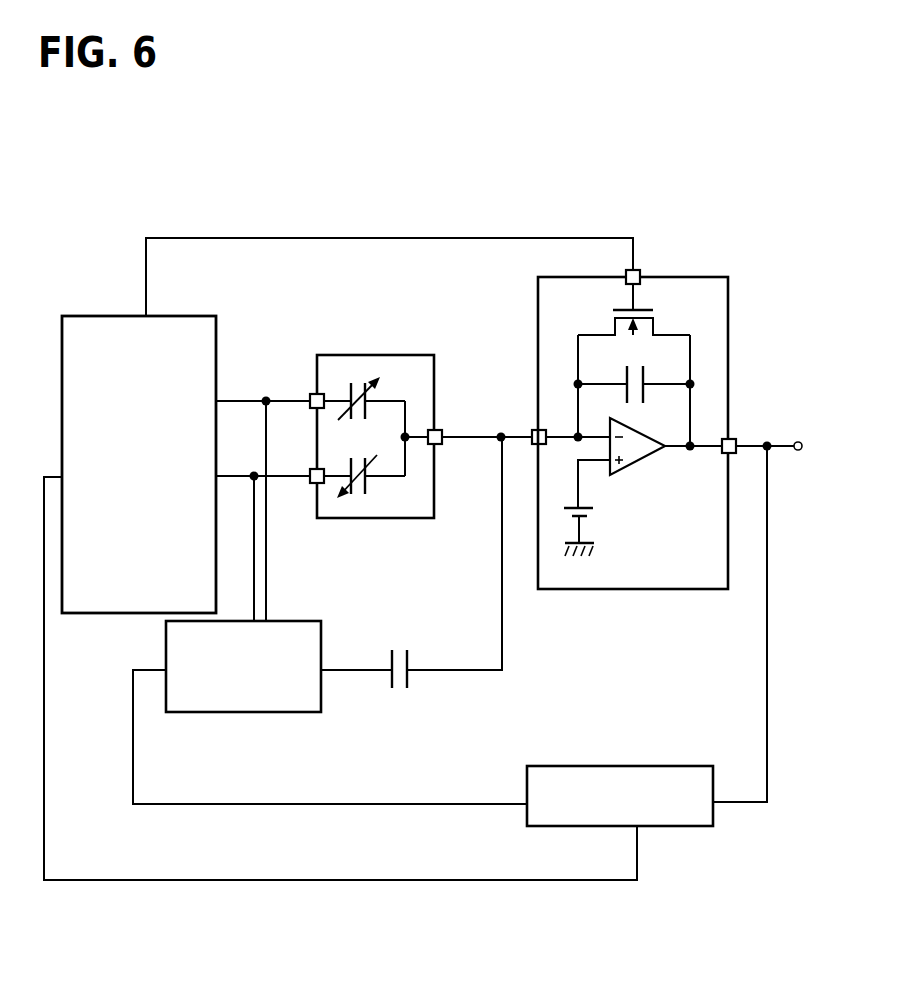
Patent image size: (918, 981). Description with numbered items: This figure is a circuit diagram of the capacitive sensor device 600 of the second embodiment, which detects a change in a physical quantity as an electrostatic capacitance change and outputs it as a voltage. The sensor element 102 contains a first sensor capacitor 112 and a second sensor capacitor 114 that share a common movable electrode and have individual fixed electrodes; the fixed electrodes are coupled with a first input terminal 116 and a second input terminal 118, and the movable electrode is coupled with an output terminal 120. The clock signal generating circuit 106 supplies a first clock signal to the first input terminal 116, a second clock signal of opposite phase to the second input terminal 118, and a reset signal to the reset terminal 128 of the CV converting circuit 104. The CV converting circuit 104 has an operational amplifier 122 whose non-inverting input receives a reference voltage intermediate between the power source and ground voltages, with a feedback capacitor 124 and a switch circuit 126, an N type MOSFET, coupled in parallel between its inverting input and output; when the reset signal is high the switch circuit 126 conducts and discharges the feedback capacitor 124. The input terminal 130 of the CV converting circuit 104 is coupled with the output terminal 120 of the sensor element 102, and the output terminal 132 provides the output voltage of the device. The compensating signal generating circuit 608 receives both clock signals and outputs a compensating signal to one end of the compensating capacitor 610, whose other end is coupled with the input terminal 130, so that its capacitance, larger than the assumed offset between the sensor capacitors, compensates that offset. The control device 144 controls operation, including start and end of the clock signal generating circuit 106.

The capacitive sensor device 600 is at (548, 184).
The clock signal generating circuit 106 is at (92, 314).
The sensor element 102 is at (388, 355).
The first sensor capacitor 112 is at (378, 387).
The second sensor capacitor 114 is at (372, 487).
The first input terminal 116 is at (313, 394).
The second input terminal 118 is at (315, 486).
The output terminal 120 is at (443, 427).
The input terminal 130 is at (535, 428).
The CV converting circuit 104 is at (693, 276).
The reset terminal 128 is at (637, 268).
The switch circuit 126 is at (655, 302).
The feedback capacitor 124 is at (625, 372).
The operational amplifier 122 is at (638, 463).
The output terminal 132 is at (735, 436).
The compensating signal generating circuit 608 is at (262, 713).
The compensating capacitor 610 is at (407, 678).
The control device 144 is at (668, 827).